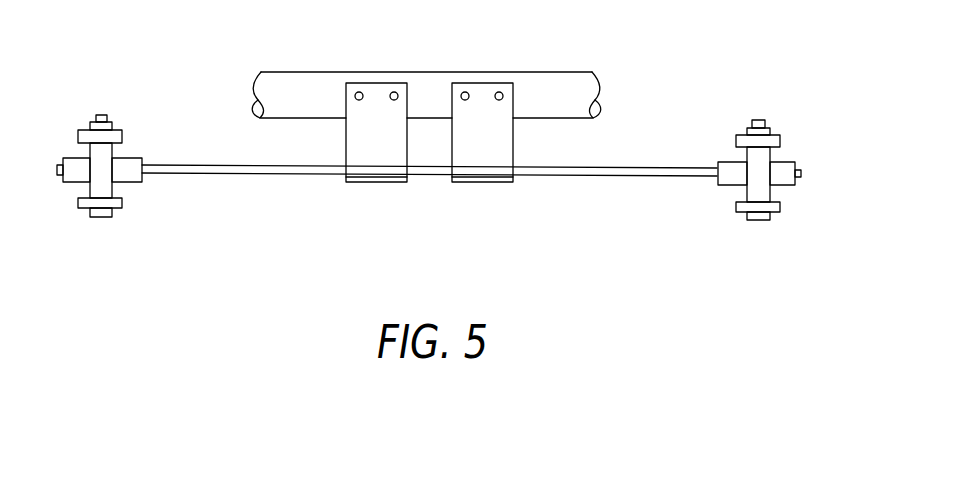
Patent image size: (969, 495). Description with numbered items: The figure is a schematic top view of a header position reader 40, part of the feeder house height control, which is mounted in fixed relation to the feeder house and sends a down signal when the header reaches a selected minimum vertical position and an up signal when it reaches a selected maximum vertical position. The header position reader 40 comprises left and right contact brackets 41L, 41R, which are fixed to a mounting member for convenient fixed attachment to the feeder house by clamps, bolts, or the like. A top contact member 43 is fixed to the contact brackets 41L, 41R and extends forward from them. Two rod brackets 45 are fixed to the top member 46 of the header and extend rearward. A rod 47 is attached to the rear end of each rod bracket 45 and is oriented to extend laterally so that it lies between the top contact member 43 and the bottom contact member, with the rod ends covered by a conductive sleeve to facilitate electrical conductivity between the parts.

The header position reader 40 is at (350, 243).
The left contact bracket 41L is at (122, 204).
The right contact bracket 41R is at (780, 207).
The top contact member 43 is at (122, 141).
The rod bracket 45 is at (513, 138).
The top member 46 is at (528, 72).
The rod 47 is at (273, 176).